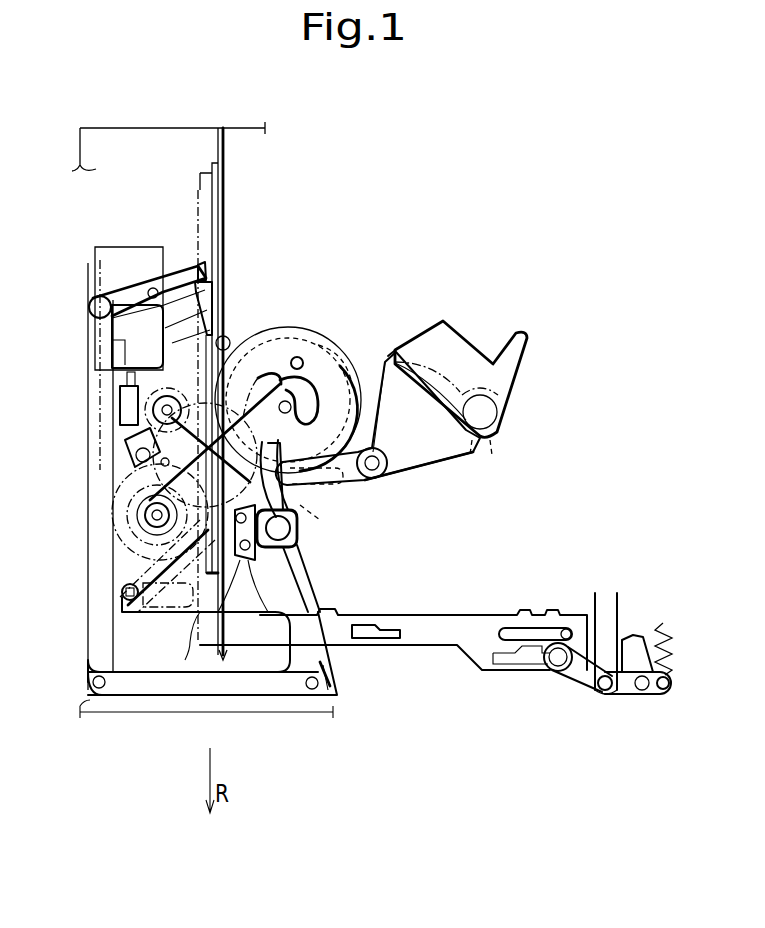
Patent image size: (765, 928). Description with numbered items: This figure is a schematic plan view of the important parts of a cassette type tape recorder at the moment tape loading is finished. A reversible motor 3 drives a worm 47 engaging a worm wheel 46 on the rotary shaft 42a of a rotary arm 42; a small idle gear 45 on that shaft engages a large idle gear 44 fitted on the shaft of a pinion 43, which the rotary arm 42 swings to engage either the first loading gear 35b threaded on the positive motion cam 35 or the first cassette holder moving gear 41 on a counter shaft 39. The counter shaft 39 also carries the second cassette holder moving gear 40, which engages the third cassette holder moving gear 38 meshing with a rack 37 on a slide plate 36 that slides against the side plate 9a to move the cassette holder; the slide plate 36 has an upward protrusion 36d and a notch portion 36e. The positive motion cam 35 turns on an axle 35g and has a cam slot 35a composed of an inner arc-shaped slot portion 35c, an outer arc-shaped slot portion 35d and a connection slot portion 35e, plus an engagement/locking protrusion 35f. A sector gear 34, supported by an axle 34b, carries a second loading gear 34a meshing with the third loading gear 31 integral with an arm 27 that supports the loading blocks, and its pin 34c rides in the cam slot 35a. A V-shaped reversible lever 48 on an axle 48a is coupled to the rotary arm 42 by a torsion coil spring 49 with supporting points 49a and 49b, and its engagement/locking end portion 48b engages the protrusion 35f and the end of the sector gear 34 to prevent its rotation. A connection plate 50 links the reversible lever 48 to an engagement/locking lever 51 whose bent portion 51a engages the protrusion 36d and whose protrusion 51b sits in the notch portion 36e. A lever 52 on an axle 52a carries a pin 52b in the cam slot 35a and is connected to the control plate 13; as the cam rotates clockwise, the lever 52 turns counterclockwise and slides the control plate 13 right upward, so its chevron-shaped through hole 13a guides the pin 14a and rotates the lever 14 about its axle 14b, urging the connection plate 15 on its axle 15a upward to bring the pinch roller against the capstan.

The reversible motor 3 is at (130, 252).
The side plate 9a is at (225, 197).
The control plate 13 is at (435, 656).
The chevron-shaped through hole 13a is at (495, 664).
The lever 14 is at (625, 698).
The pin 14a is at (555, 672).
The axle 14b is at (663, 692).
The connection plate 15 is at (608, 614).
The axle 15a is at (605, 694).
The arm 27 is at (466, 346).
The third loading gear 31 is at (491, 446).
The sector gear 34 is at (470, 460).
The second loading gear 34a is at (498, 415).
The axle 34b is at (385, 470).
The pin 34c is at (300, 507).
The positive motion cam 35 is at (330, 347).
The cam slot 35a is at (428, 380).
The first loading gear 35b is at (318, 345).
The inner arc-shaped slot portion 35c is at (320, 407).
The outer arc-shaped slot portion 35d is at (395, 354).
The connection slot portion 35e is at (310, 522).
The engagement/locking protrusion 35f is at (297, 357).
The axle 35g is at (374, 438).
The slide plate 36 is at (212, 198).
The protrusion 36d is at (210, 302).
The notch portion 36e is at (215, 337).
The rack 37 is at (198, 232).
The third cassette holder moving gear 38 is at (115, 497).
The counter shaft 39 is at (140, 539).
The second cassette holder moving gear 40 is at (152, 522).
The first cassette holder moving gear 41 is at (135, 572).
The rotary arm 42 is at (290, 549).
The rotary shaft 42a is at (125, 446).
The pinion 43 is at (245, 562).
The large idle gear 44 is at (140, 515).
The small idle gear 45 is at (120, 402).
The worm wheel 46 is at (155, 414).
The worm 47 is at (127, 377).
The reversible lever 48 is at (157, 695).
The axle 48a is at (320, 702).
The engagement/locking end portion 48b is at (328, 488).
The torsion coil spring 49 is at (312, 592).
The supporting point 49a is at (325, 662).
The supporting point 49b is at (222, 652).
The connection plate 50 is at (88, 655).
The engagement/locking lever 51 is at (100, 300).
The bent portion 51a is at (206, 272).
The protrusion 51b is at (220, 346).
The lever 52 is at (125, 596).
The axle 52a is at (127, 461).
The pin 52b is at (335, 362).